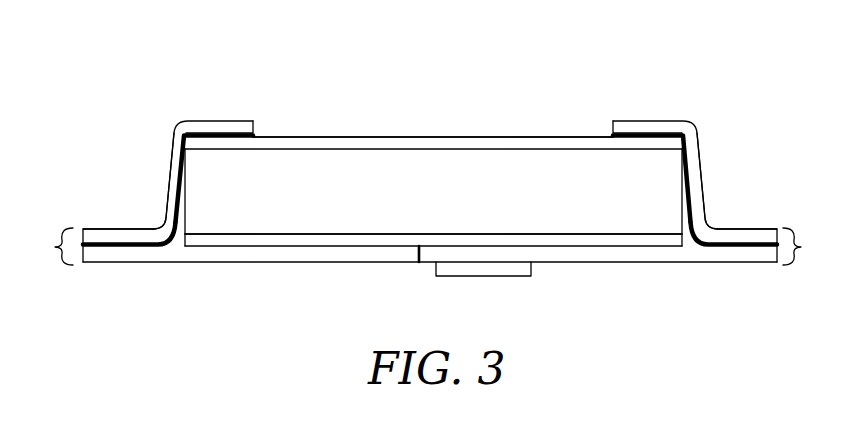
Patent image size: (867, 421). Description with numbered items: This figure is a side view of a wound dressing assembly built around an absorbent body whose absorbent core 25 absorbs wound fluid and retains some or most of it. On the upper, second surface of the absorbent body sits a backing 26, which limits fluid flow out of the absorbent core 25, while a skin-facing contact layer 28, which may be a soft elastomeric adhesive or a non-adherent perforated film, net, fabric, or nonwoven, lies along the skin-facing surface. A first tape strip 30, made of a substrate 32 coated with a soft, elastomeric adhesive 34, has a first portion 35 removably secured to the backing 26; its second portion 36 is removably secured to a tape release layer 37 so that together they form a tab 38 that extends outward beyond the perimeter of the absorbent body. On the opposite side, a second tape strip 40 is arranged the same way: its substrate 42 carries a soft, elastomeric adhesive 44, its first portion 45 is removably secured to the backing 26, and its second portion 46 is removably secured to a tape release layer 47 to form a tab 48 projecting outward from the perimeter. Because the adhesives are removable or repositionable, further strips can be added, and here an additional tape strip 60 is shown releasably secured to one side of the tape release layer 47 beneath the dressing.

The absorbent core 25 is at (522, 160).
The backing 26 is at (452, 143).
The skin-facing contact layer 28 is at (630, 233).
The first tape strip 30 is at (175, 151).
The substrate 32 is at (100, 233).
The soft, elastomeric adhesive 34 is at (100, 248).
The first portion 35 is at (139, 168).
The second portion 36 is at (128, 215).
The tape release layer 37 is at (206, 255).
The tab 38 is at (49, 246).
The second tape strip 40 is at (694, 152).
The substrate 42 is at (748, 233).
The soft, elastomeric adhesive 44 is at (747, 248).
The first portion 45 is at (722, 173).
The second portion 46 is at (732, 220).
The tape release layer 47 is at (614, 262).
The tab 48 is at (807, 246).
The additional tape strip 60 is at (510, 277).